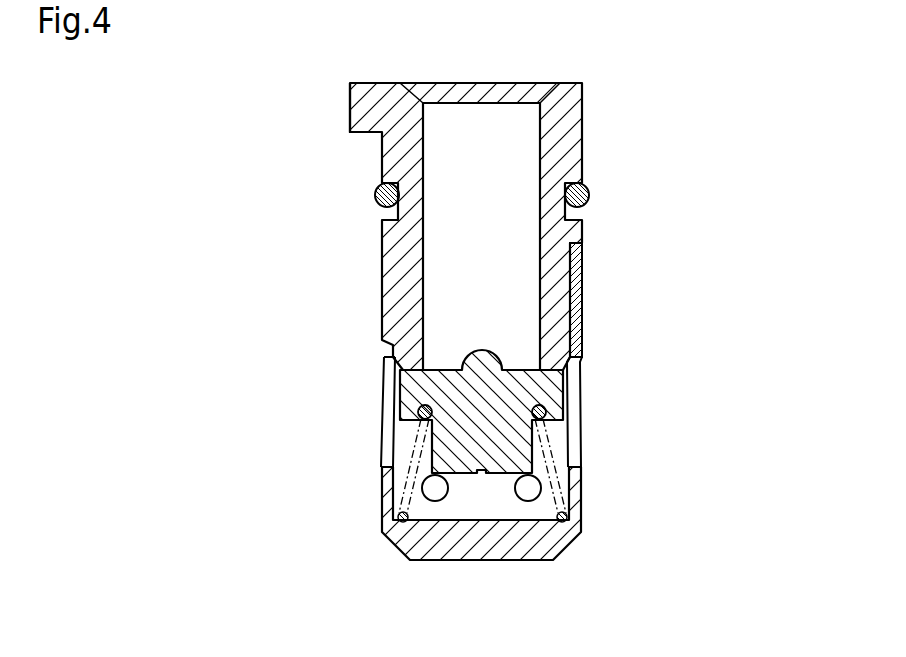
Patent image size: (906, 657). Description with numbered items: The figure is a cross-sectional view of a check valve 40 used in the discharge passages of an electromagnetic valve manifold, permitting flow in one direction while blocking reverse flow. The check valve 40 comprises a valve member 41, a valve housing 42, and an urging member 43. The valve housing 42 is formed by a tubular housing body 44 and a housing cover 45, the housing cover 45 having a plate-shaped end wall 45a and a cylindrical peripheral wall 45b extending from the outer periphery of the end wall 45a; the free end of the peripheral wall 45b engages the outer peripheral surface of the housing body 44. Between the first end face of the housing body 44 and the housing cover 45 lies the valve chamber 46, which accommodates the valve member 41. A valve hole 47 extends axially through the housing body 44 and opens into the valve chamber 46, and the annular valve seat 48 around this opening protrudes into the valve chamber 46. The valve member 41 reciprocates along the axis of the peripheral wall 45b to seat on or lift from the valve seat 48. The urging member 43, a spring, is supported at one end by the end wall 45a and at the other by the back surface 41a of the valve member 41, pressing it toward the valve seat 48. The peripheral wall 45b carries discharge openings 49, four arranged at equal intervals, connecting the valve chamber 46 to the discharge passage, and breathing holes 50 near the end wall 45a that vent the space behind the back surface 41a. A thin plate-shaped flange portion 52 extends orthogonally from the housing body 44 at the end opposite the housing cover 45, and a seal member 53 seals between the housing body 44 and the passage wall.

The check valve 40 is at (620, 112).
The valve member 41 is at (446, 411).
The back surface 41a is at (383, 437).
The valve housing 42 is at (527, 275).
The urging member 43 is at (474, 543).
The housing body 44 is at (583, 233).
The housing cover 45 is at (612, 355).
The end wall 45a is at (490, 557).
The peripheral wall 45b is at (577, 343).
The valve chamber 46 is at (553, 432).
The valve hole 47 is at (453, 247).
The valve seat 48 is at (412, 373).
The discharge opening 49 is at (415, 411).
The breathing hole 50 is at (437, 492).
The flange portion 52 is at (348, 107).
The seal member 53 is at (589, 191).